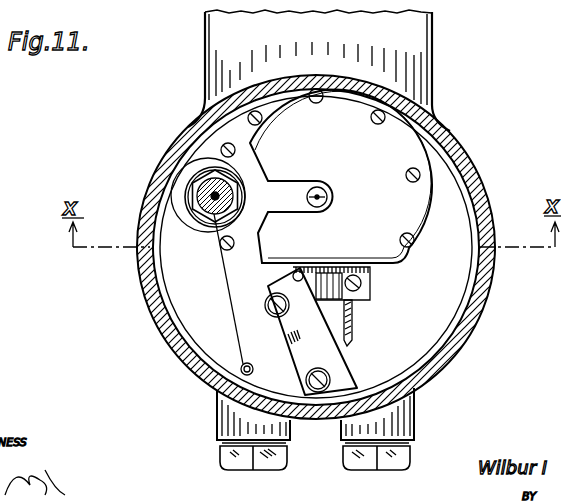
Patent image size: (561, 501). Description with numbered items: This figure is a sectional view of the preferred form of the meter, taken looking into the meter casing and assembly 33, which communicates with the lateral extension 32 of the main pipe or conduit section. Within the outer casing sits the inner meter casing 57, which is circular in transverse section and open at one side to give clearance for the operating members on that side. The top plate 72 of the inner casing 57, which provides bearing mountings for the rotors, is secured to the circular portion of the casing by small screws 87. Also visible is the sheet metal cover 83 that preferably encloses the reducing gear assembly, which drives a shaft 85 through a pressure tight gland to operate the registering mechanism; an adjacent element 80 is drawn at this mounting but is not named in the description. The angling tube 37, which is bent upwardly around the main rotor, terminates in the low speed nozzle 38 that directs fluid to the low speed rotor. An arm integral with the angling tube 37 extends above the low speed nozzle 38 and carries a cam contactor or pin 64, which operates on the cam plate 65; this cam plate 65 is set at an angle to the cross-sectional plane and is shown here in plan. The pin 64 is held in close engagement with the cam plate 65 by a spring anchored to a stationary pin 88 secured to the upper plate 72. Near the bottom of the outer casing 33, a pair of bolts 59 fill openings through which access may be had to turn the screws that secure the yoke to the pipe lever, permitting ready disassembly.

The lateral extension 32 is at (214, 40).
The meter casing and assembly 33 is at (486, 116).
The small screws 87 is at (222, 148).
The inner meter casing 57 is at (413, 240).
The top plate 72 is at (390, 200).
The sheet metal cover 83 is at (178, 180).
The terminal nut 80 is at (196, 198).
The shaft 85 is at (208, 212).
The stationary pin 88 is at (243, 373).
The low speed nozzle 38 is at (350, 305).
The angling tube 37 is at (353, 330).
The cam contactor or pin 64 is at (293, 276).
The cam plate 65 is at (292, 337).
The bolts 59 is at (280, 460).